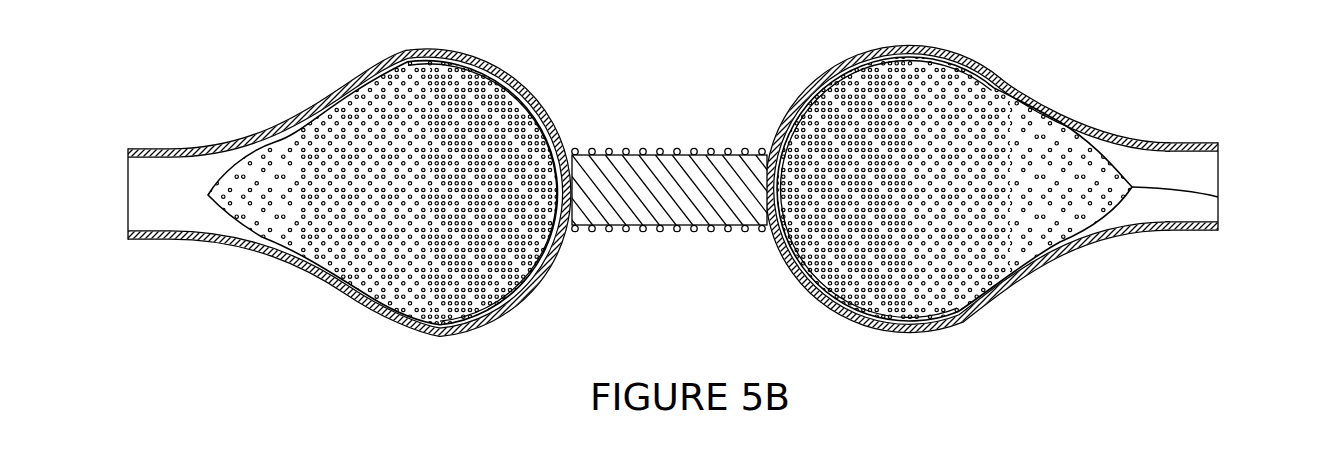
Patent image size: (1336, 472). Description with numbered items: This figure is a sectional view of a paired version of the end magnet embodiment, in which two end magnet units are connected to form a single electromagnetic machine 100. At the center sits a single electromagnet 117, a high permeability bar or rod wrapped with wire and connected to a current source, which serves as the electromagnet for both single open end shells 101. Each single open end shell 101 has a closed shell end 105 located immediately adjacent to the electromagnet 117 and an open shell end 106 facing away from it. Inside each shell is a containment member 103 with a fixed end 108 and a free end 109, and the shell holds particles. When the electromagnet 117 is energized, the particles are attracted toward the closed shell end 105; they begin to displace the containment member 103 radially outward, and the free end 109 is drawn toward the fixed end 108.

The electromagnetic machine 100 is at (718, 173).
The single open end shell 101 is at (890, 46).
The containment member 103 is at (1017, 222).
The closed shell end 105 is at (773, 115).
The open shell end 106 is at (1139, 137).
The fixed end 108 is at (807, 223).
The free end 109 is at (1218, 197).
The electromagnet 117 is at (688, 232).